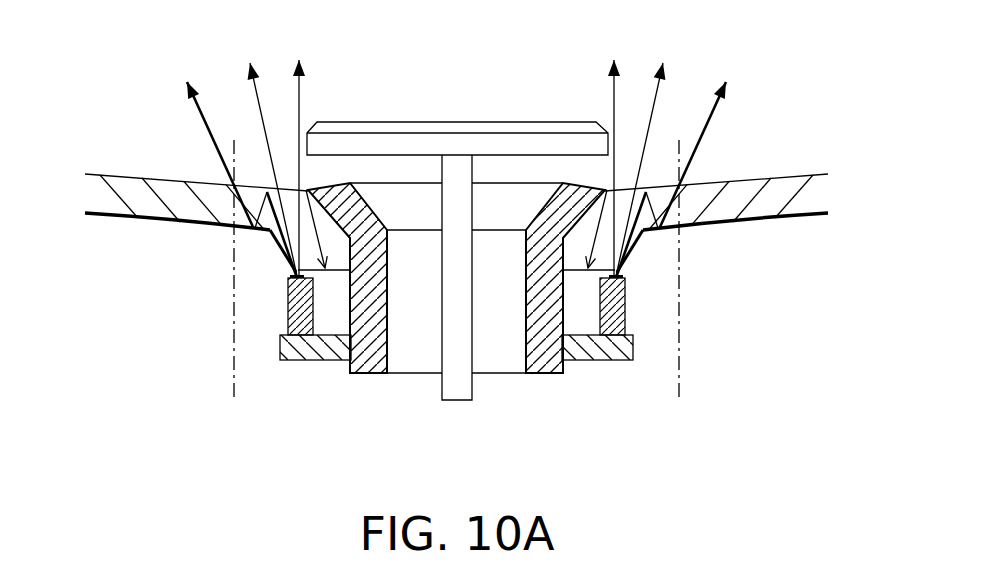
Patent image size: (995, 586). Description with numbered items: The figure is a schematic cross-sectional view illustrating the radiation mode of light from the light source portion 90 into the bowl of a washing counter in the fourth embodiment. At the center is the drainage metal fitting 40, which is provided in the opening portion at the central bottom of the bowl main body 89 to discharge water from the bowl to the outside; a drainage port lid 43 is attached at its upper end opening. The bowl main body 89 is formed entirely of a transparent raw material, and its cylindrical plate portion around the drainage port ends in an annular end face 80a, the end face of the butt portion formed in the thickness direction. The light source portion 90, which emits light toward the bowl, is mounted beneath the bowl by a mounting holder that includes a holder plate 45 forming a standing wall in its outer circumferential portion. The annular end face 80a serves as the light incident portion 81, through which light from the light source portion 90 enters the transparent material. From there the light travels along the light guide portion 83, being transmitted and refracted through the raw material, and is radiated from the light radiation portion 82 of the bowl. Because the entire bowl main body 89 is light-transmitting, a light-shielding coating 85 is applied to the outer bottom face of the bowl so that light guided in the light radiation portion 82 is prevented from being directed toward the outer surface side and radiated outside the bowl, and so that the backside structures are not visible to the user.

The drainage metal fitting 40 is at (460, 112).
The drainage port lid 43 is at (430, 120).
The holder plate 45 is at (313, 360).
The annular end face 80a is at (325, 270).
The light incident portion 81 is at (282, 262).
The light radiation portion 82 is at (252, 178).
The light guide portion 83 is at (272, 242).
The light-shielding coating 85 is at (110, 218).
The bowl main body 89 is at (153, 197).
The light source portion 90 is at (287, 310).